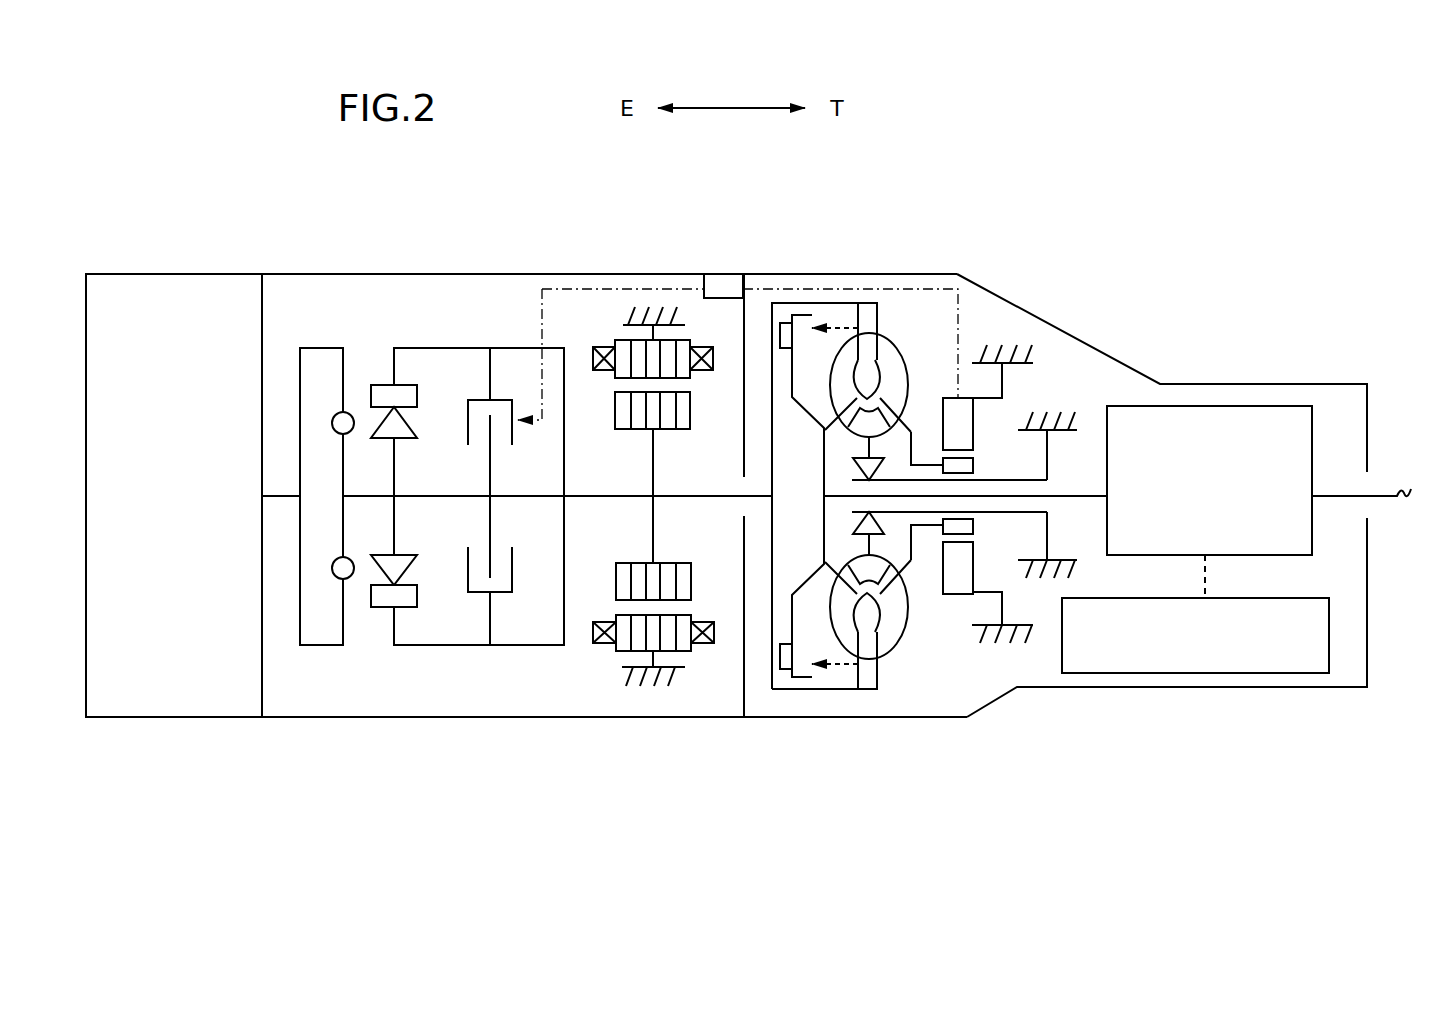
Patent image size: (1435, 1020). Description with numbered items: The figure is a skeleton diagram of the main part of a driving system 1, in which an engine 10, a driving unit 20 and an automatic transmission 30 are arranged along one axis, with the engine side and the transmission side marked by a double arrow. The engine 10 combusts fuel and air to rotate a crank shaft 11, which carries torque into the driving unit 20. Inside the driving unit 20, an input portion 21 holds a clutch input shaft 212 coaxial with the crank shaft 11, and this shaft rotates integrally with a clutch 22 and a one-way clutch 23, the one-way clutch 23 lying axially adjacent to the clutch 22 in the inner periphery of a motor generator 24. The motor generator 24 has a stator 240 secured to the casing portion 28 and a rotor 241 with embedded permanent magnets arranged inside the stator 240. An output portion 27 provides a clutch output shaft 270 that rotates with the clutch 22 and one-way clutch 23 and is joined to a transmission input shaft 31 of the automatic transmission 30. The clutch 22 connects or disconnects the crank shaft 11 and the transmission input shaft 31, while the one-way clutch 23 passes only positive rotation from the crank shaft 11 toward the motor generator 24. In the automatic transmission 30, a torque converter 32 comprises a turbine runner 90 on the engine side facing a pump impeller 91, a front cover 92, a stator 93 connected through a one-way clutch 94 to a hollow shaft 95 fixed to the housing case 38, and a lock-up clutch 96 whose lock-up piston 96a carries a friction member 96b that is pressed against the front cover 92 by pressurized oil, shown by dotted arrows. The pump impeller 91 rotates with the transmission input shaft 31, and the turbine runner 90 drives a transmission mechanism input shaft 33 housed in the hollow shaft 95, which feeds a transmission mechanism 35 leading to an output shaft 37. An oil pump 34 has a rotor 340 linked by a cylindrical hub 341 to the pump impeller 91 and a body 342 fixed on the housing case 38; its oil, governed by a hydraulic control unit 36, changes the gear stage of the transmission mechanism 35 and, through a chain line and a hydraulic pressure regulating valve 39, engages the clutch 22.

The driving system 1 is at (1228, 160).
The engine 10 is at (178, 246).
The crank shaft 11 is at (283, 495).
The driving unit 20 is at (517, 256).
The input portion 21 is at (325, 348).
The clutch 22 is at (468, 428).
The one-way clutch 23 is at (378, 385).
The clutch input shaft 212 is at (350, 496).
The motor generator 24 is at (602, 338).
The stator 240 is at (603, 648).
The rotor 241 is at (637, 430).
The output portion 27 is at (668, 506).
The clutch output shaft 270 is at (689, 496).
The casing portion 28 is at (428, 718).
The hydraulic pressure regulating valve 39 is at (705, 283).
The automatic transmission 30 is at (957, 254).
The transmission input shaft 31 is at (748, 486).
The turbine runner 90 is at (840, 345).
The pump impeller 91 is at (902, 353).
The front cover 92 is at (772, 690).
The stator 93 is at (903, 433).
The one-way clutch 94 is at (860, 511).
The hollow shaft 95 is at (1033, 503).
The lock-up clutch 96 is at (820, 208).
The lock-up piston 96a is at (792, 378).
The friction member 96b is at (783, 322).
The torque converter 32 is at (905, 664).
The transmission mechanism input shaft 33 is at (1065, 493).
The oil pump 34 is at (996, 416).
The rotor 340 is at (973, 525).
The hub 341 is at (925, 527).
The body 342 is at (973, 437).
The transmission mechanism 35 is at (1204, 406).
The hydraulic control unit 36 is at (1272, 675).
The output shaft 37 is at (1328, 490).
The housing case 38 is at (995, 703).